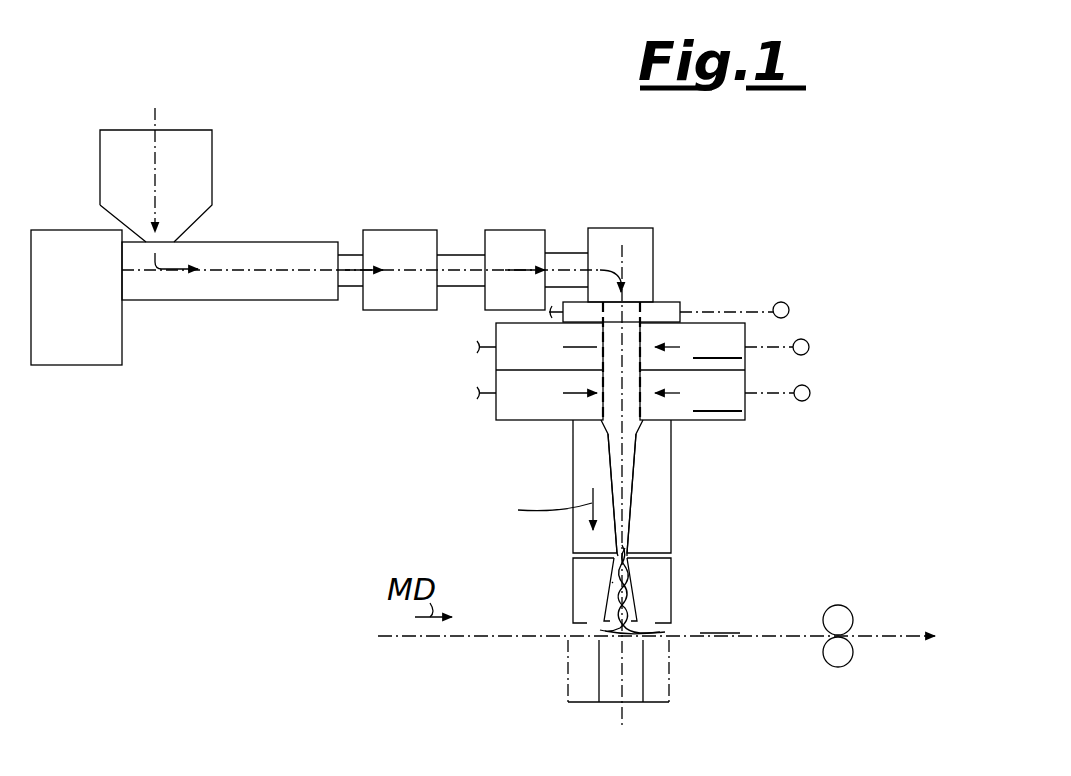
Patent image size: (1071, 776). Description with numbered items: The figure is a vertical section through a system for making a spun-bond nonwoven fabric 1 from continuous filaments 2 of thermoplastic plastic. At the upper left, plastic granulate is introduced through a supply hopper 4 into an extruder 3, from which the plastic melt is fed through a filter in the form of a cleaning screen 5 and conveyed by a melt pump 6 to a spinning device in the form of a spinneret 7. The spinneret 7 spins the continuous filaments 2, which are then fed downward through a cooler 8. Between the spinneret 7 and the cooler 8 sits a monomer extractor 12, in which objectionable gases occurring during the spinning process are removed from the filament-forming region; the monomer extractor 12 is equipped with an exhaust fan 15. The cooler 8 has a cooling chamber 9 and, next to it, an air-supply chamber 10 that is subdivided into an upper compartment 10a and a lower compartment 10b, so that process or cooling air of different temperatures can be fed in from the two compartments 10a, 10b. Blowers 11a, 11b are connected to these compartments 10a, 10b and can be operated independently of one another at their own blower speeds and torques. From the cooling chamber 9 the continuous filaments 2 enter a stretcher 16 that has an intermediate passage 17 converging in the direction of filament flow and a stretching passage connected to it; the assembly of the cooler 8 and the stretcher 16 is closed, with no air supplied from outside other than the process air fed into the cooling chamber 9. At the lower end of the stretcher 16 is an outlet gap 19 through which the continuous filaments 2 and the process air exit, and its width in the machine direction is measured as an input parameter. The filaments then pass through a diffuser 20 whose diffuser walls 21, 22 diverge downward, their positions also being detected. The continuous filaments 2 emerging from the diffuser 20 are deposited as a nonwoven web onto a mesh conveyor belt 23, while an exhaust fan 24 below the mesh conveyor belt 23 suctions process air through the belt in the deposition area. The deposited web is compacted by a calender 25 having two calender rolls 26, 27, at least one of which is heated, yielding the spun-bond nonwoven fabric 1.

The spun-bond nonwoven fabric 1 is at (718, 628).
The continuous filaments 2 is at (612, 582).
The extruder 3 is at (291, 235).
The supply hopper 4 is at (93, 152).
The cleaning screen 5 is at (411, 225).
The melt pump 6 is at (525, 225).
The spinneret 7 is at (647, 225).
The cooler 8 is at (630, 527).
The cooling chamber 9 is at (613, 362).
The air-supply chamber 10 is at (747, 388).
The upper compartment 10a is at (702, 342).
The lower compartment 10b is at (750, 412).
The blower 11a is at (807, 340).
The blower 11b is at (808, 386).
The monomer extractor 12 is at (679, 300).
The exhaust fan 15 is at (786, 303).
The stretcher 16 is at (560, 487).
The intermediate passage 17 is at (625, 495).
The outlet gap 19 is at (625, 546).
The diffuser 20 is at (641, 585).
The diffuser wall 21 is at (607, 600).
The diffuser wall 22 is at (632, 607).
The mesh conveyor belt 23 is at (780, 638).
The exhaust fan 24 is at (637, 698).
The calender 25 is at (882, 609).
The calender roll 26 is at (848, 620).
The calender roll 27 is at (848, 657).